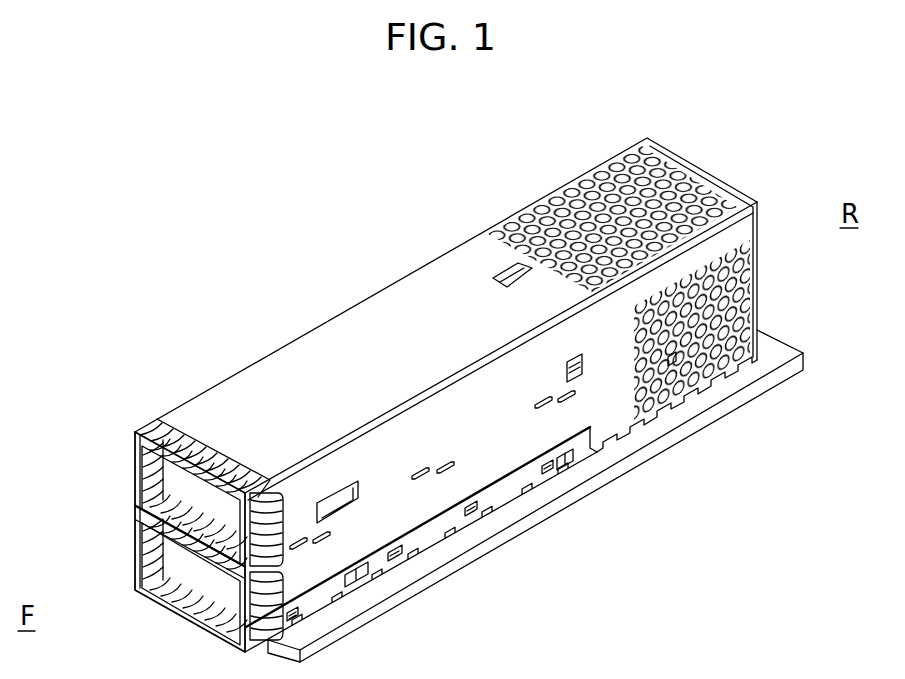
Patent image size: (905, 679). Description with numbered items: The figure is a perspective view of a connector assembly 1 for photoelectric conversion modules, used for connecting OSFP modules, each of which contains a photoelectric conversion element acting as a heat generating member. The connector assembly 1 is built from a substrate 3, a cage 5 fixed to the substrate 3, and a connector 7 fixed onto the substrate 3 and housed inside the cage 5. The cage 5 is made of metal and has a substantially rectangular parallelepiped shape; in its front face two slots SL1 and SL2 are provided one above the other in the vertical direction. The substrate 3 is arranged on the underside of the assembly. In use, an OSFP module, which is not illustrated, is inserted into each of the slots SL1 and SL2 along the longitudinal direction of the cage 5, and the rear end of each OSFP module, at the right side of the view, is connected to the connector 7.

The connector assembly 1 is at (137, 337).
The substrate 3 is at (653, 448).
The cage 5 is at (280, 362).
The connector 7 is at (609, 189).
The slot SL1 is at (125, 562).
The slot SL2 is at (124, 480).